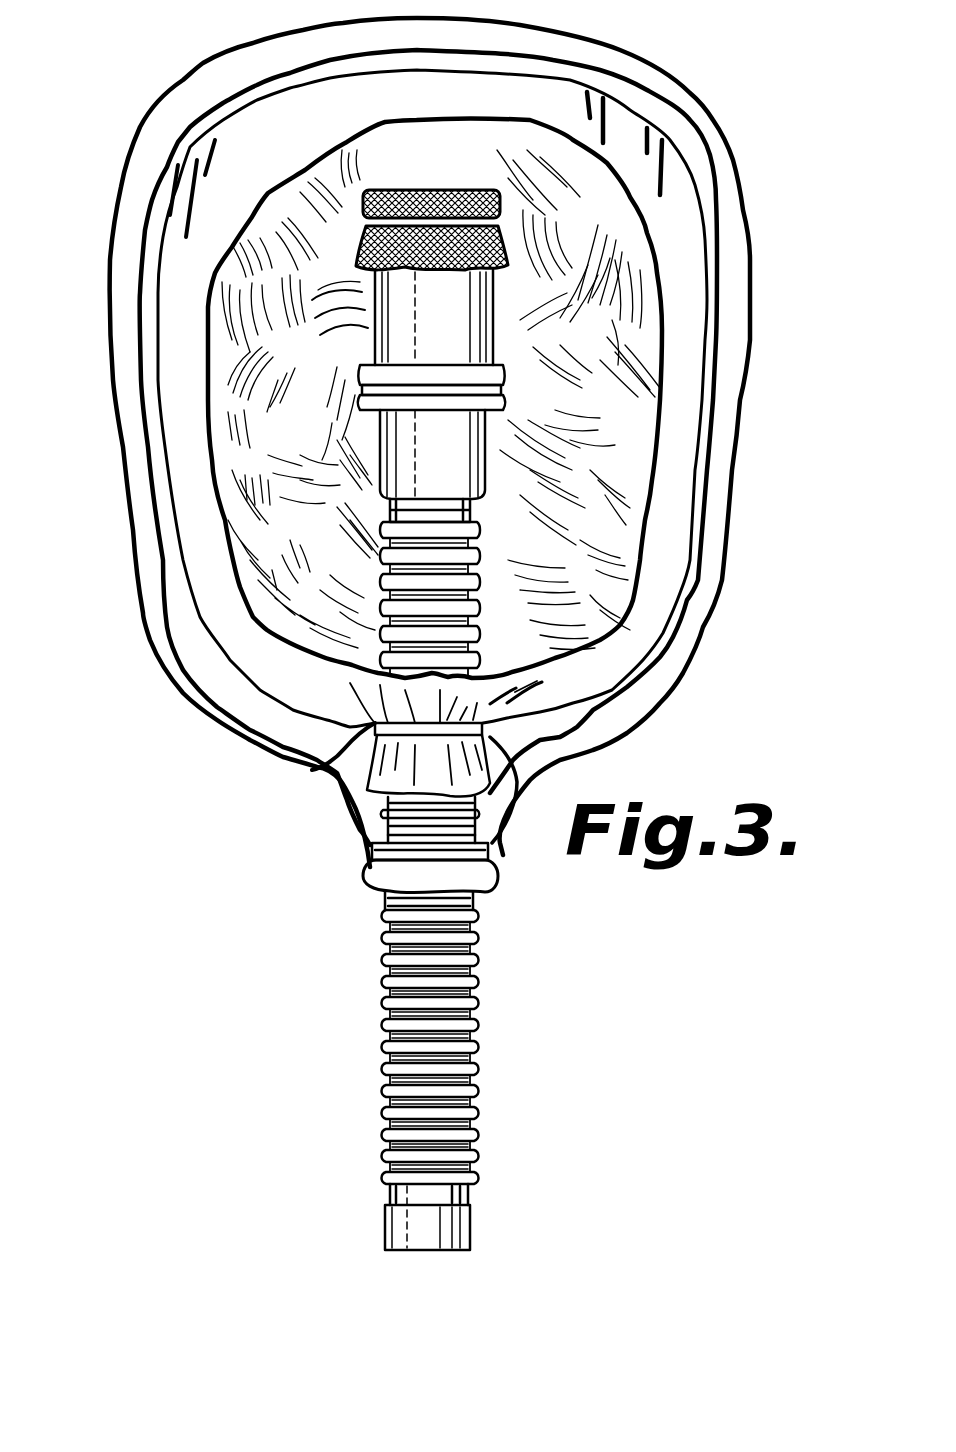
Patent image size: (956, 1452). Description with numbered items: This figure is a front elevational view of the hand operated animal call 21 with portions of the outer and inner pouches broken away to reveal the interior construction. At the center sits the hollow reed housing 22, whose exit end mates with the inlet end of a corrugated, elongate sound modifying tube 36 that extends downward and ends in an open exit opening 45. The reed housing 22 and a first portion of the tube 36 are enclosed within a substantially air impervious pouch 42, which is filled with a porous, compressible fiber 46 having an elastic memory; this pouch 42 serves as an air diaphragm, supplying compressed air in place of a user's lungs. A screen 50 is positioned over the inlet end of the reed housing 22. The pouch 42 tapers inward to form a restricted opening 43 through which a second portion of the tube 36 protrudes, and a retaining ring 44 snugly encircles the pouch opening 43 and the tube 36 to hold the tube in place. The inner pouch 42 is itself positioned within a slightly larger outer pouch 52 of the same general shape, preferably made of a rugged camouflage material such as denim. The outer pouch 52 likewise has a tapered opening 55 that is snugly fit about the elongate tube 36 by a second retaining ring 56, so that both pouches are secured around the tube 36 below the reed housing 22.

The hand operated animal call 21 is at (777, 331).
The reed housing 22 is at (452, 323).
The sound modifying tube 36 is at (378, 1045).
The pouch 42 is at (220, 615).
The restricted opening 43 is at (375, 822).
The retaining ring 44 is at (340, 770).
The exit opening 45 is at (405, 1252).
The porous, compressible fiber 46 is at (237, 488).
The screen 50 is at (362, 248).
The outer pouch 52 is at (723, 560).
The tapered opening 55 is at (382, 894).
The retaining ring 56 is at (386, 870).